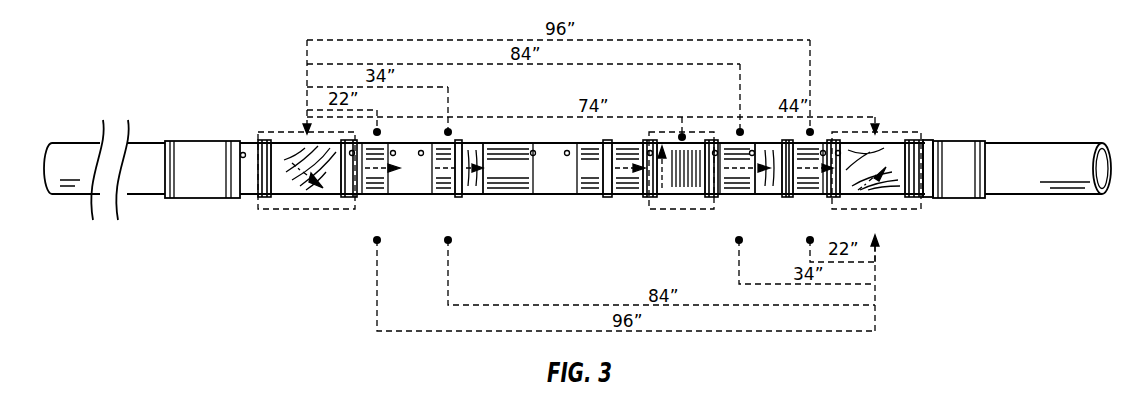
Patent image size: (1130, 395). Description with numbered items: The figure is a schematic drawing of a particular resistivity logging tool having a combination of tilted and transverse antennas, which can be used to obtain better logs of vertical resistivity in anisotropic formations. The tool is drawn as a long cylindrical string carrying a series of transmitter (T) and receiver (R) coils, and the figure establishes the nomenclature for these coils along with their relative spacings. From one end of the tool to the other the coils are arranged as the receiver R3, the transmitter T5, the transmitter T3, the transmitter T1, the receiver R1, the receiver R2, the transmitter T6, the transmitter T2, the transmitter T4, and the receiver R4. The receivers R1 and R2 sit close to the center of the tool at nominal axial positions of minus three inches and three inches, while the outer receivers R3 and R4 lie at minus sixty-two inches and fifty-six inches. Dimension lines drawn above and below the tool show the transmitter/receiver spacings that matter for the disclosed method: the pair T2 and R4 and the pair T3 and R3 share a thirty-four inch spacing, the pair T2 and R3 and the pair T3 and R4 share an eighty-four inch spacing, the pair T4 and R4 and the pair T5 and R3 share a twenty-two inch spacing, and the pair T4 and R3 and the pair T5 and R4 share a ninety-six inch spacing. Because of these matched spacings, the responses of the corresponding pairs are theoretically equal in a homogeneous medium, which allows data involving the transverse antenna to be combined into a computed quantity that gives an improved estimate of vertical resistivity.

The receiver R3 is at (306, 184).
The transmitter T5 is at (381, 189).
The transmitter T3 is at (445, 189).
The transmitter T1 is at (508, 189).
The receiver R1 is at (590, 189).
The receiver R2 is at (628, 189).
The transmitter T6 is at (681, 184).
The transmitter T2 is at (737, 189).
The transmitter T4 is at (813, 189).
The receiver R4 is at (876, 184).